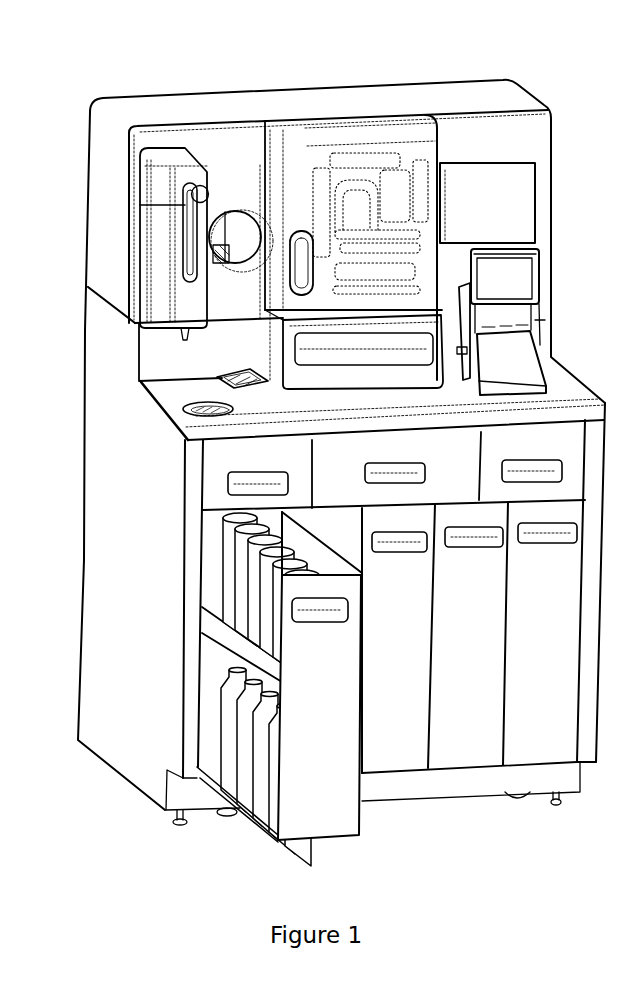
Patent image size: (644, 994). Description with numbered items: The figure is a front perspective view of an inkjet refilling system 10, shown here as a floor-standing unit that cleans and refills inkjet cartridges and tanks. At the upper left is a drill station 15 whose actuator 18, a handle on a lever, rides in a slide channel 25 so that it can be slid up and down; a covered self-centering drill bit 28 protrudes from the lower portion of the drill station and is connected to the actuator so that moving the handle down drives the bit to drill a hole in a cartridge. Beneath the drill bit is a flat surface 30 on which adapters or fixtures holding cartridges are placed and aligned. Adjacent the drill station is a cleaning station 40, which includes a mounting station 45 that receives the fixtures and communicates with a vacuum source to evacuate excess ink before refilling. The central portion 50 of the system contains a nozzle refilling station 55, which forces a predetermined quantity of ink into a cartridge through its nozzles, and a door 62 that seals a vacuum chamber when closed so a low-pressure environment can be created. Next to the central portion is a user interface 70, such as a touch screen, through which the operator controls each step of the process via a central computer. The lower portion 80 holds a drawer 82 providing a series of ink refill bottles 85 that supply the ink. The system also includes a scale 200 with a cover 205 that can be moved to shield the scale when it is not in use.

The inkjet refilling system 10 is at (537, 52).
The drill station 15 is at (168, 146).
The actuator 18 is at (195, 213).
The slide channel 25 is at (175, 250).
The covered self-centering drill bit 28 is at (218, 357).
The flat surface 30 is at (180, 387).
The cleaning station 40 is at (205, 373).
The mounting station 45 is at (178, 406).
The central portion 50 is at (361, 128).
The nozzle refilling station 55 is at (303, 229).
The door 62 is at (403, 176).
The user interface 70 is at (512, 190).
The lower portion 80 is at (118, 640).
The drawer 82 is at (293, 830).
The ink refill bottles 85 is at (238, 593).
The scale 200 is at (530, 349).
The cover 205 is at (540, 273).